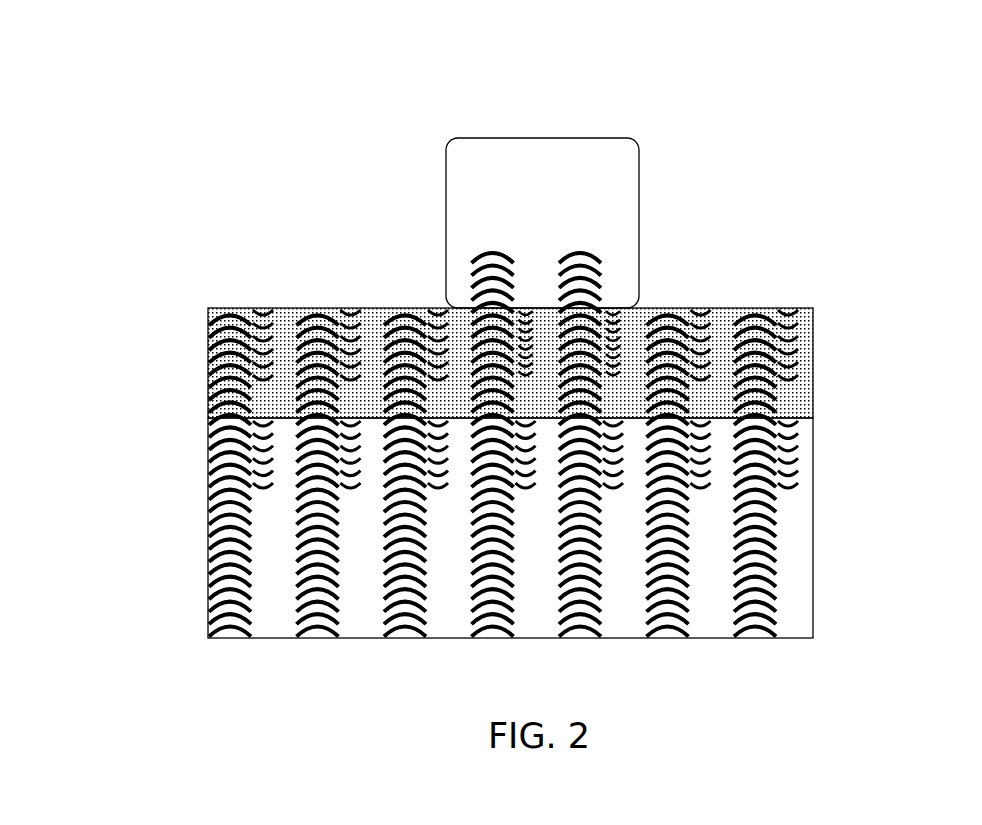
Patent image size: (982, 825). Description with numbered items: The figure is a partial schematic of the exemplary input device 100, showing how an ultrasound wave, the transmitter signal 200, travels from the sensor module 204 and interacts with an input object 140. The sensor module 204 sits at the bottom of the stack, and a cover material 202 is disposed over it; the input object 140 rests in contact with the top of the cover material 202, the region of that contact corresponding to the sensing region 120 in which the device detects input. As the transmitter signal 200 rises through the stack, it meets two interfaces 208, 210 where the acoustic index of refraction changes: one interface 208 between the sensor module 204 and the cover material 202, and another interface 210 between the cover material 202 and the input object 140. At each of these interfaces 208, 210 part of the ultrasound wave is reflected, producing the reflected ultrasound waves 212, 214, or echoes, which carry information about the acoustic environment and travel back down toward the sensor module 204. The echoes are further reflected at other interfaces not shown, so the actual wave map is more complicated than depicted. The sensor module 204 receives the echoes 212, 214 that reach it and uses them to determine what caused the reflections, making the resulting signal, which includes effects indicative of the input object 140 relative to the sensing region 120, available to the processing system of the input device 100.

The input device 100 is at (283, 177).
The sensing region 120 is at (690, 150).
The input object 140 is at (610, 160).
The transmitter signal 200 is at (320, 587).
The cover material 202 is at (263, 393).
The sensor module 204 is at (270, 585).
The interface 208 is at (289, 418).
The interface 210 is at (613, 310).
The reflected ultrasound wave 212 is at (350, 483).
The reflected ultrasound wave 214 is at (622, 380).